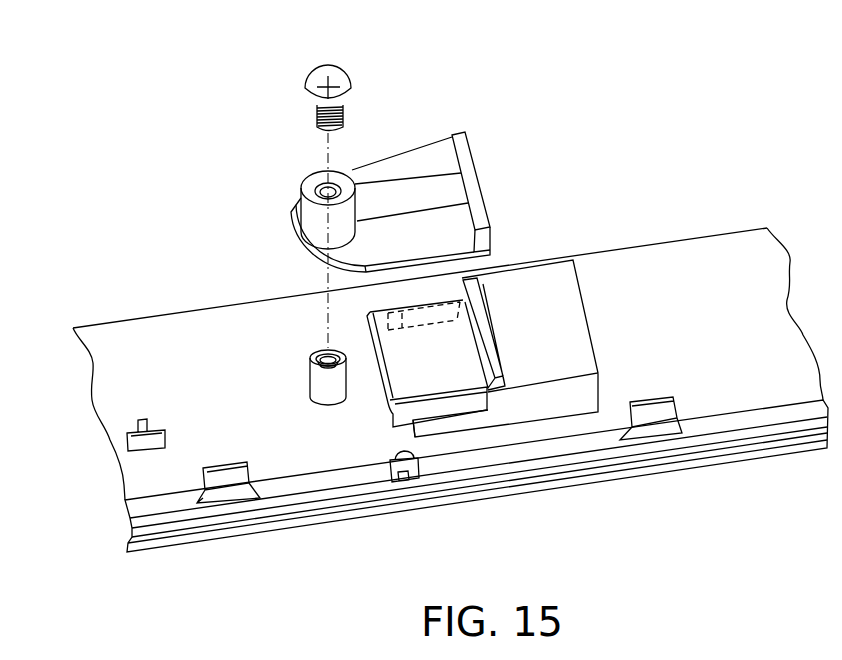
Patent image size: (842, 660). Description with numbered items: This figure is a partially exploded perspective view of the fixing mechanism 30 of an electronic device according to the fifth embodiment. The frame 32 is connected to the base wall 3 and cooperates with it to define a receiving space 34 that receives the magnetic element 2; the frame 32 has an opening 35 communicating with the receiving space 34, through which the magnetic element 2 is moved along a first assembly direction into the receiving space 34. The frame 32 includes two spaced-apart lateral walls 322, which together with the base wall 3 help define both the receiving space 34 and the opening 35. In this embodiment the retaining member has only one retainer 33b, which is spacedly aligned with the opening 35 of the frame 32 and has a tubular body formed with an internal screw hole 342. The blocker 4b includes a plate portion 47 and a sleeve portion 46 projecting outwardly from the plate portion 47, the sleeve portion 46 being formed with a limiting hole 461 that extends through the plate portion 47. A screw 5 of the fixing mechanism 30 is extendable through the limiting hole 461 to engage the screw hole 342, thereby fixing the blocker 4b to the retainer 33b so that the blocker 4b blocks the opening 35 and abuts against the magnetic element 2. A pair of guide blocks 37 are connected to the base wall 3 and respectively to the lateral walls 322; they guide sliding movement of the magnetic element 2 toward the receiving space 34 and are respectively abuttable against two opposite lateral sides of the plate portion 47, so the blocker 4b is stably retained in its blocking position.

The fixing mechanism 30 is at (281, 111).
The screw 5 is at (351, 88).
The blocker 4b is at (430, 154).
The sleeve portion 46 is at (313, 173).
The limiting hole 461 is at (323, 192).
The plate portion 47 is at (377, 161).
The base wall 3 is at (157, 317).
The screw hole 342 is at (313, 356).
The retainer 33b is at (328, 399).
The frame 32 is at (599, 346).
The lateral walls 322 is at (548, 407).
The magnetic element 2 is at (445, 368).
The opening 35 is at (497, 336).
The receiving space 34 is at (489, 333).
The guide blocks 37 is at (494, 290).